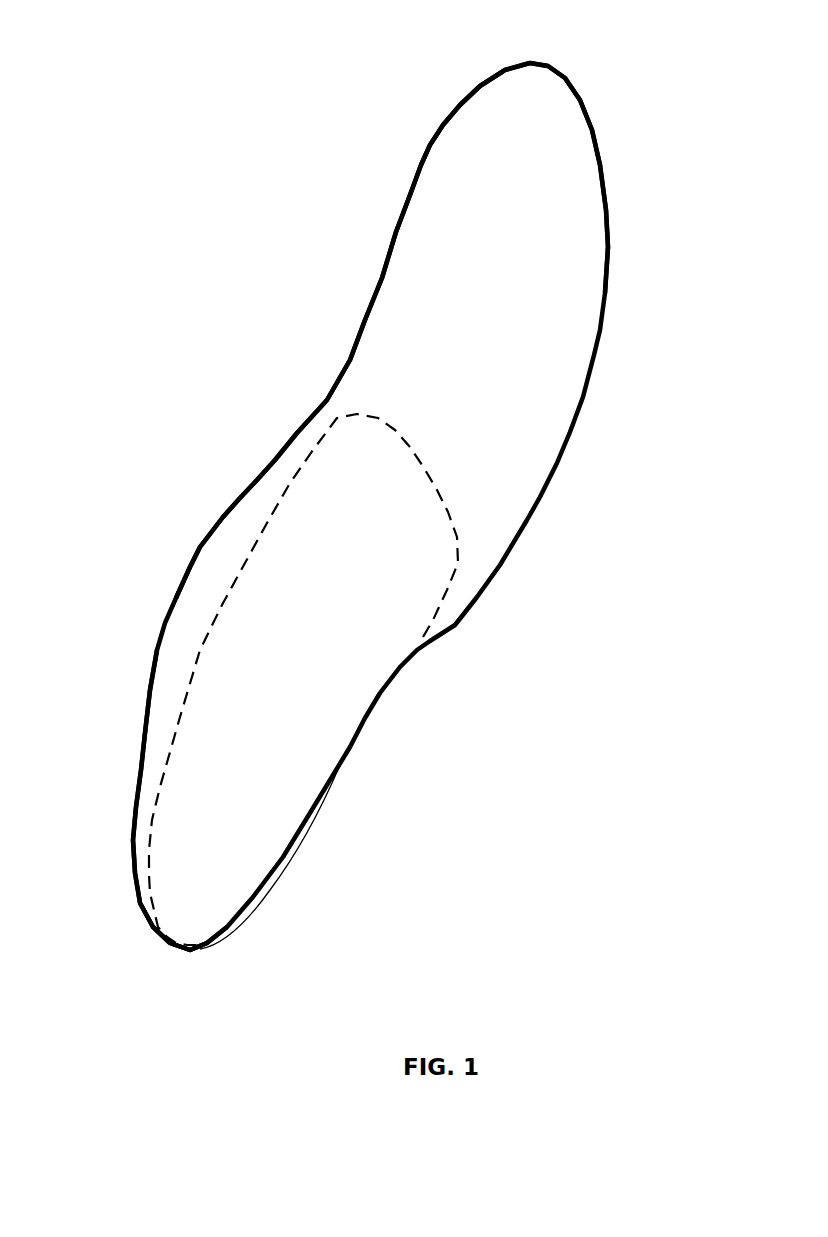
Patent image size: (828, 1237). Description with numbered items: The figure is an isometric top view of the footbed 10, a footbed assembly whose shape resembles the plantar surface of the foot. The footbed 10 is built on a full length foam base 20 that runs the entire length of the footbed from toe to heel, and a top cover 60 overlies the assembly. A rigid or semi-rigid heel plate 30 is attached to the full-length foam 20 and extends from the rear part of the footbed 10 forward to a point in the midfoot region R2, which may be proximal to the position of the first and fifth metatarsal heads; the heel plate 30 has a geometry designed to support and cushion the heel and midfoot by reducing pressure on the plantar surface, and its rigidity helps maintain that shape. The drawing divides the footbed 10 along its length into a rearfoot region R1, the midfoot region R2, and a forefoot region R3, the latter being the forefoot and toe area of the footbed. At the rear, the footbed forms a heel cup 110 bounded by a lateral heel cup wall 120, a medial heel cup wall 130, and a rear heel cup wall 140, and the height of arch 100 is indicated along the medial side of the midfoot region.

The footbed 10 is at (259, 347).
The full length foam base 20 is at (412, 283).
The heel plate 30 is at (222, 657).
The top cover 60 is at (573, 191).
The height of arch 100 is at (300, 434).
The heel cup 110 is at (207, 903).
The lateral heel cup wall 120 is at (292, 854).
The medial heel cup wall 130 is at (145, 755).
The rear heel cup wall 140 is at (152, 930).
The rearfoot region of footbed R1 is at (541, 526).
The midfoot region of footbed R2 is at (546, 531).
The forefoot region of footbed R3 is at (257, 1009).